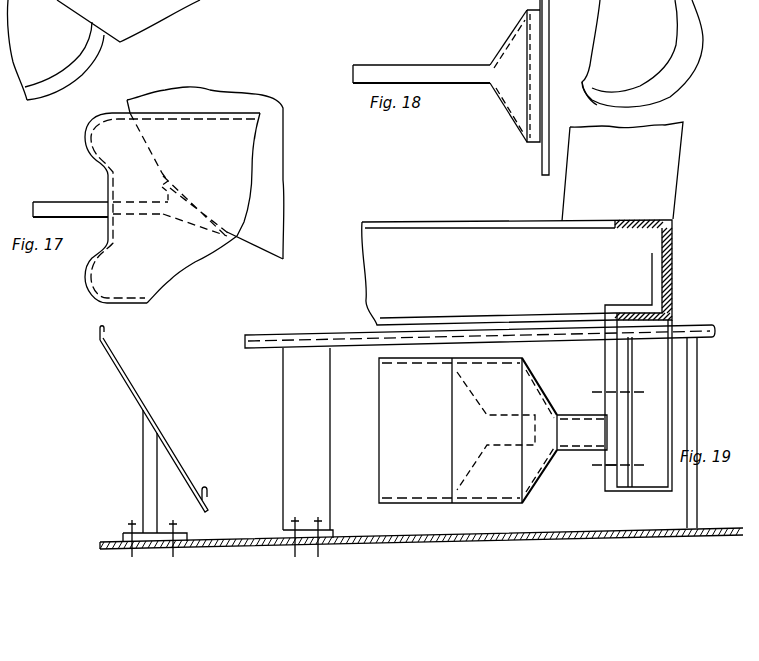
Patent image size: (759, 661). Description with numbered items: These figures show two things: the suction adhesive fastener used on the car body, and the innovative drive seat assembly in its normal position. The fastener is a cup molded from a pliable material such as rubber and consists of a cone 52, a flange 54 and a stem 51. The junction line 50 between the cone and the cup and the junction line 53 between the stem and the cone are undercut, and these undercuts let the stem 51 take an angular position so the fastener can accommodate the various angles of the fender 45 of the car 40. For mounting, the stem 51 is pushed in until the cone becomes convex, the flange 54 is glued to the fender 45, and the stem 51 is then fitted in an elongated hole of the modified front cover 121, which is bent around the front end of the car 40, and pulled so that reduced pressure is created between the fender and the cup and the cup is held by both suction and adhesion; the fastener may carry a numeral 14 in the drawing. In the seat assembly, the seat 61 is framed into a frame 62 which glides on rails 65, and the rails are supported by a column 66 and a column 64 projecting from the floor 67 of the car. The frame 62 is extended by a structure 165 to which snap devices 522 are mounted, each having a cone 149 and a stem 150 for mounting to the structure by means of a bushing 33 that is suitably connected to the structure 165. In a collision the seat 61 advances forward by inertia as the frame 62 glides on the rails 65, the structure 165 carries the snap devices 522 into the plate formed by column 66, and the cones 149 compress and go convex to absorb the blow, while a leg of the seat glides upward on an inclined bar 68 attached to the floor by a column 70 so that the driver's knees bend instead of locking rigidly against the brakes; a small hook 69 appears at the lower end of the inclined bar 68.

In FIG. 18, the seat back portion 14 is at (703, 40).
In FIG. 17, the car 40 is at (199, 0).
In FIG. 17, the fender 45 is at (278, 167).
In FIG. 17, the front cover 121 is at (187, 270).
In FIG. 18, the junction line 50 is at (525, 143).
In FIG. 18, the stem 51 is at (410, 65).
In FIG. 18, the cone 52 is at (507, 110).
In FIG. 18, the junction line 53 is at (490, 65).
In FIG. 18, the flange 54 is at (548, 130).
In FIG. 19, the seat 61 is at (522, 223).
In FIG. 19, the frame 62 is at (632, 275).
In FIG. 19, the column 64 is at (698, 398).
In FIG. 19, the rails 65 is at (703, 322).
In FIG. 19, the column 66 is at (283, 413).
In FIG. 19, the floor 67 is at (120, 543).
In FIG. 19, the inclined bar 68 is at (158, 427).
In FIG. 19, the hook 69 is at (208, 497).
In FIG. 19, the column 70 is at (143, 478).
In FIG. 19, the cone 149 is at (537, 384).
In FIG. 19, the stem 150 is at (582, 432).
In FIG. 19, the bushing 33 is at (561, 418).
In FIG. 19, the structure 165 is at (607, 466).
In FIG. 19, the snap device 522 is at (402, 504).